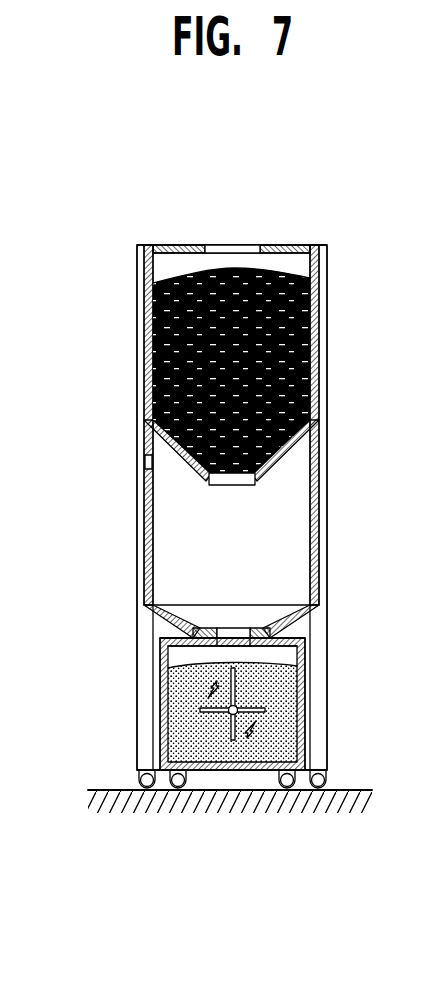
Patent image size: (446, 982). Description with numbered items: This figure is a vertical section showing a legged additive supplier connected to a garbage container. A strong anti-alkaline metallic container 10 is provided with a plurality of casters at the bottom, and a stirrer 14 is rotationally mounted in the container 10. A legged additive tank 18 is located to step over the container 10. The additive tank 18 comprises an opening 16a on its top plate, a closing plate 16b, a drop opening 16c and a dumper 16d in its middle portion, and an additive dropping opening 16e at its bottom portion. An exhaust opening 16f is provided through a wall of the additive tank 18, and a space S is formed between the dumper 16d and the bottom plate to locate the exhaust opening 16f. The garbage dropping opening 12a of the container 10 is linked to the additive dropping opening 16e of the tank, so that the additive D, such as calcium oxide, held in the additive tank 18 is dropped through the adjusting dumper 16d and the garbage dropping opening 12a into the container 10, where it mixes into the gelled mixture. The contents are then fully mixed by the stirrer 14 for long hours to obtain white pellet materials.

The legged additive tank 18 is at (137, 270).
The opening 16a is at (230, 246).
The additive D is at (304, 352).
The drop opening 16c is at (230, 486).
The dumper 16d is at (255, 483).
The exhaust opening 16f is at (147, 462).
The space S is at (268, 545).
The closing plate 16b is at (240, 630).
The additive dropping opening 16e is at (228, 632).
The container 10 is at (305, 691).
The garbage dropping opening 12a is at (233, 647).
The stirrer 14 is at (213, 770).